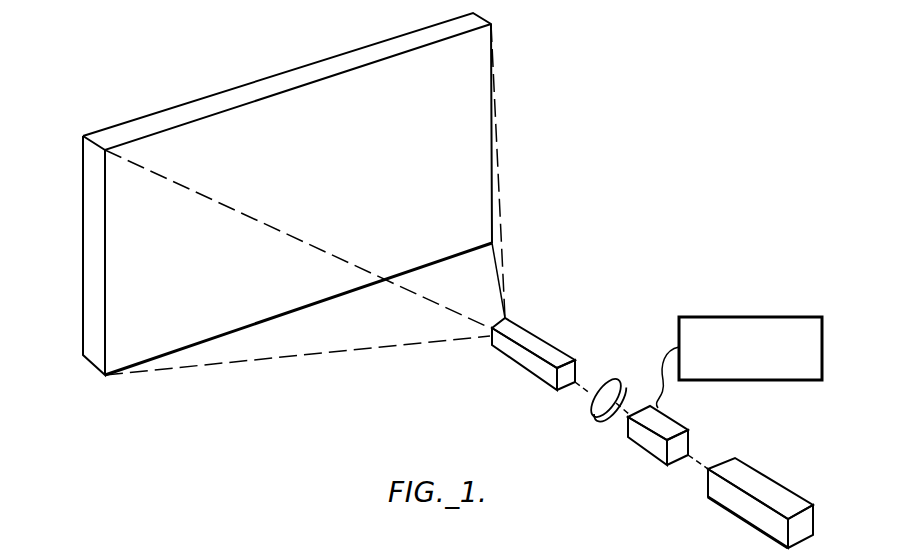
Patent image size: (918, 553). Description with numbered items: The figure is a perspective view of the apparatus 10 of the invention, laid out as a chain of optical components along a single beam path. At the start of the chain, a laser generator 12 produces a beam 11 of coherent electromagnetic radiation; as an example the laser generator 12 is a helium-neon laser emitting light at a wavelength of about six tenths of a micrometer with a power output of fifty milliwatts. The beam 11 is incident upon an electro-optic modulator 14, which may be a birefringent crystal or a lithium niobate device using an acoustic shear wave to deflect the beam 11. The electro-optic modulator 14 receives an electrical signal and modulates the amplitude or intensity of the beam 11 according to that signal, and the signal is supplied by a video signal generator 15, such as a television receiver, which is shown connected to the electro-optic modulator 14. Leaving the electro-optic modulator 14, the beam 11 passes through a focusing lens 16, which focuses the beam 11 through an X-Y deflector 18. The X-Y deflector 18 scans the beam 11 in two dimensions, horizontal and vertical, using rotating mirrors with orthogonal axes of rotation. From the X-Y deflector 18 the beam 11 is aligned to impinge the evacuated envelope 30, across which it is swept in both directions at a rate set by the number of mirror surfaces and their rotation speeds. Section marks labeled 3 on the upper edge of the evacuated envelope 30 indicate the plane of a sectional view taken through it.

The section line of FIG. 3 is at (262, 73).
The apparatus 10 is at (92, 424).
The beam 11 is at (503, 285).
The laser generator 12 is at (773, 490).
The electro-optic modulator 14 is at (675, 418).
The video signal generator 15 is at (780, 317).
The focusing lens 16 is at (615, 380).
The X-Y deflector 18 is at (545, 345).
The evacuated envelope 30 is at (83, 242).